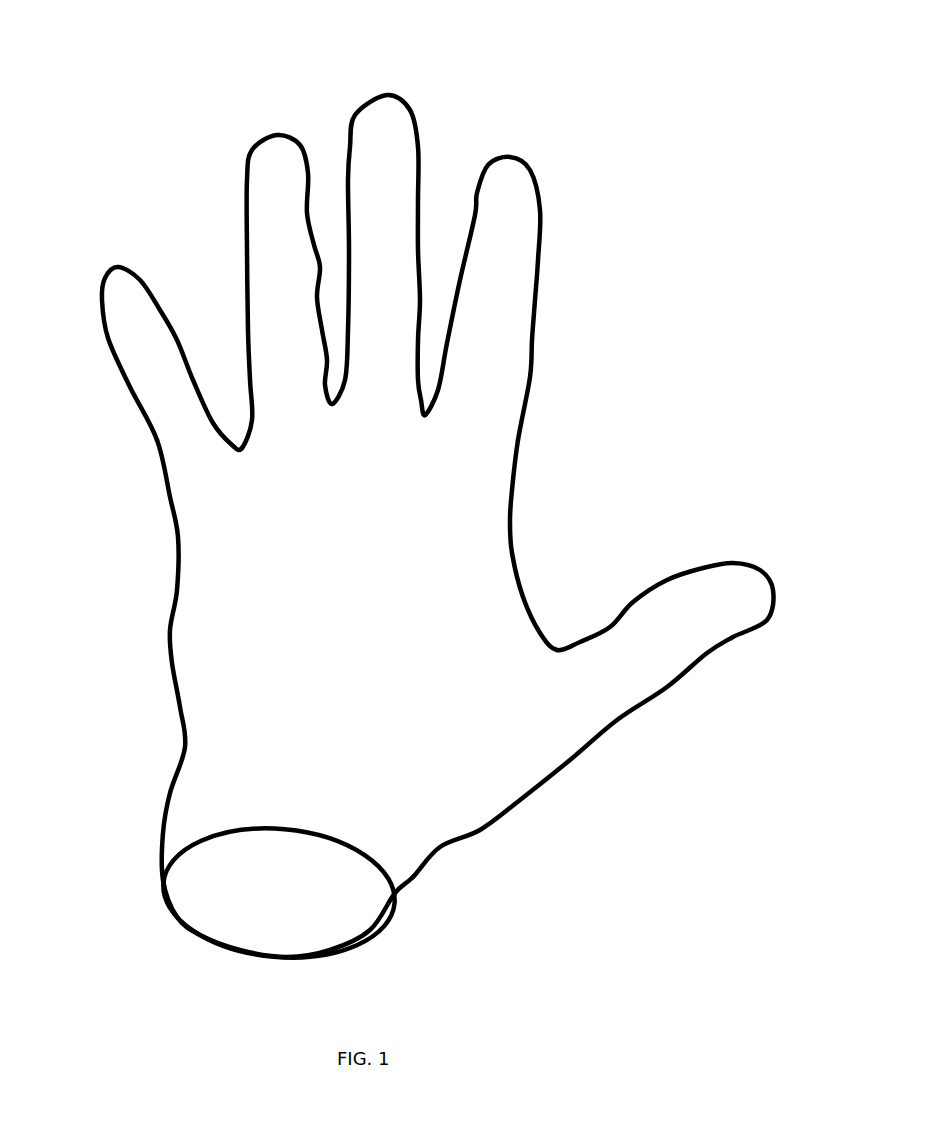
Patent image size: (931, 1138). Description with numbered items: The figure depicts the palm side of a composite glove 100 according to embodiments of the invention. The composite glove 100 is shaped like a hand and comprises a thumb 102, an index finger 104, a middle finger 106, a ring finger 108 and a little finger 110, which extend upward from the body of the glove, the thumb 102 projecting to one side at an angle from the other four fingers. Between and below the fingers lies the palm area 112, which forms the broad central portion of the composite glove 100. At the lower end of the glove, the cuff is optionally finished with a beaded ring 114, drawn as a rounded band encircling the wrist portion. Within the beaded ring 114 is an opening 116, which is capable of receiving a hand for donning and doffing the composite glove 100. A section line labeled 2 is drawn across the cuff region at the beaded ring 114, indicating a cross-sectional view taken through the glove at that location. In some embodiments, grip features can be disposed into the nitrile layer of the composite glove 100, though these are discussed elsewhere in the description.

The composite glove 100 is at (643, 74).
The thumb 102 is at (751, 562).
The index finger 104 is at (506, 152).
The middle finger 106 is at (382, 93).
The ring finger 108 is at (273, 132).
The little finger 110 is at (113, 264).
The palm area 112 is at (305, 660).
The beaded ring 114 is at (223, 949).
The opening 116 is at (313, 920).
The section line 2- 2 is at (415, 900).